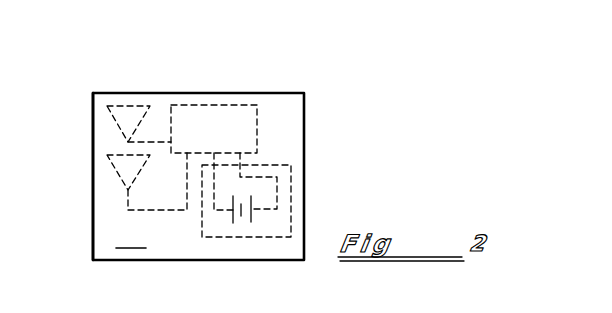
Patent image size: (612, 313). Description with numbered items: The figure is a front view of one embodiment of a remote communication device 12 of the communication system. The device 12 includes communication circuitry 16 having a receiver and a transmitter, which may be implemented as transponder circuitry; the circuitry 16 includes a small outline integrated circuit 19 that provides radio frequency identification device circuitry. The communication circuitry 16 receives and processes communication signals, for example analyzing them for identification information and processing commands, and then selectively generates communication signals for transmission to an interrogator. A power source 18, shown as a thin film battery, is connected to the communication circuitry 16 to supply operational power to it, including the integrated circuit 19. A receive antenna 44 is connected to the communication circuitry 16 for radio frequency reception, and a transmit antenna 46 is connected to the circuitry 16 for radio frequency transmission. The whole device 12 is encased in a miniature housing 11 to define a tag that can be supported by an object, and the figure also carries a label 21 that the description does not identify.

The miniature housing 11 is at (93, 223).
The remote communication device 12 is at (318, 125).
The communication circuitry 16 is at (268, 118).
The power source 18 is at (291, 198).
The small outline integrated circuit 19 is at (232, 105).
The indicia 21 is at (131, 237).
The receive antenna 44 is at (132, 105).
The transmit antenna 46 is at (91, 176).